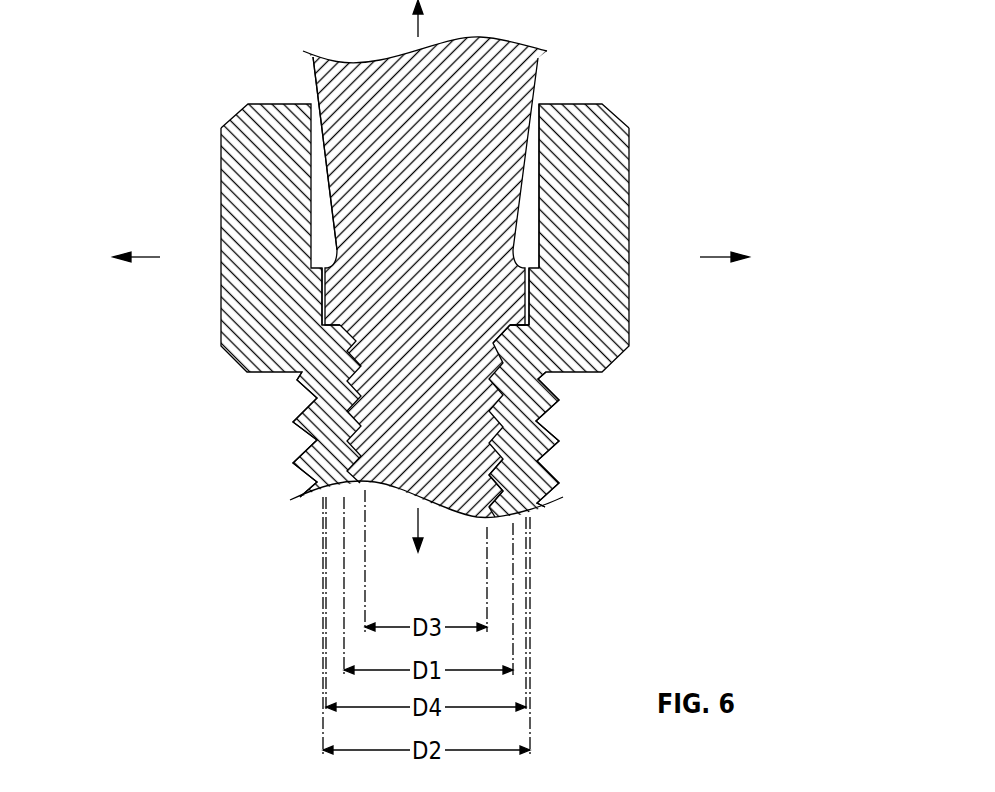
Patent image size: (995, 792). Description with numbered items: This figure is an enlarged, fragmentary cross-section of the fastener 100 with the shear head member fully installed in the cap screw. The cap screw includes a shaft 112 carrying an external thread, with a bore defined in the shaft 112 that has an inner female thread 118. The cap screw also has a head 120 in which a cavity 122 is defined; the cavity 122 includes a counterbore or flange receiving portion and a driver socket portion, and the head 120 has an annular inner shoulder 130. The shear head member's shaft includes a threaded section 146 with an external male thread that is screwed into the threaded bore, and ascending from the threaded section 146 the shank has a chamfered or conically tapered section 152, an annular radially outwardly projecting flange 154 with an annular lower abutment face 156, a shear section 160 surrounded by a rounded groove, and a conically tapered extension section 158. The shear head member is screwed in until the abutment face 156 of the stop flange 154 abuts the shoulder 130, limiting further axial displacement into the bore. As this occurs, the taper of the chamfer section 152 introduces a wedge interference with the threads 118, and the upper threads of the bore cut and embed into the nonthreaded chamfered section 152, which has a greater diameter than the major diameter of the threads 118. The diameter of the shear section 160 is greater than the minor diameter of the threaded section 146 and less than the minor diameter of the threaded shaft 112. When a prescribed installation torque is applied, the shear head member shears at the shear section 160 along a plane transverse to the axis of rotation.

The fastener 100 is at (195, 52).
The shaft 112 is at (521, 483).
The inner female thread 118 is at (347, 331).
The head 120 is at (238, 197).
The cavity 122 is at (525, 200).
The annular inner shoulder 130 is at (313, 299).
The threaded section 146 is at (538, 457).
The chamfered section 152 is at (483, 334).
The flange 154 is at (520, 302).
The lower abutment face 156 is at (322, 296).
The conically tapered extension section 158 is at (527, 68).
The shear section 160 is at (482, 253).